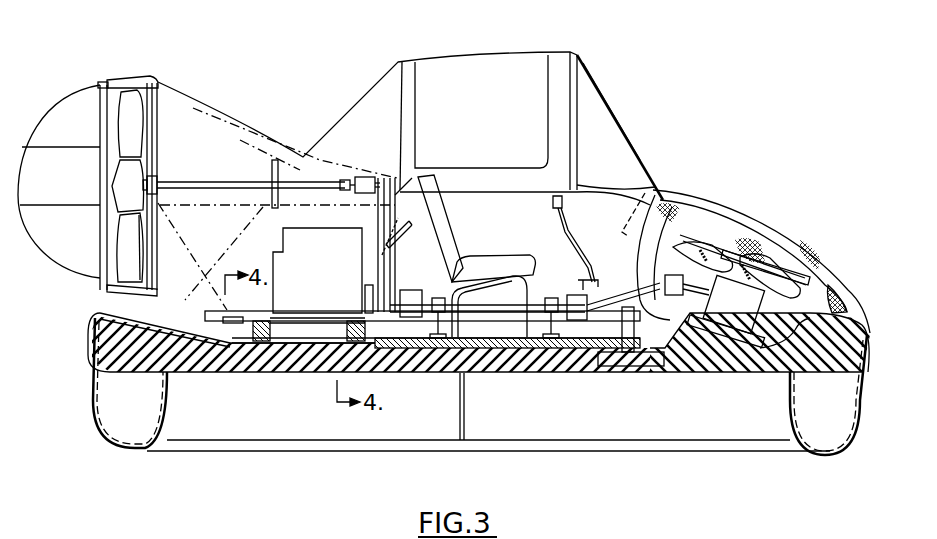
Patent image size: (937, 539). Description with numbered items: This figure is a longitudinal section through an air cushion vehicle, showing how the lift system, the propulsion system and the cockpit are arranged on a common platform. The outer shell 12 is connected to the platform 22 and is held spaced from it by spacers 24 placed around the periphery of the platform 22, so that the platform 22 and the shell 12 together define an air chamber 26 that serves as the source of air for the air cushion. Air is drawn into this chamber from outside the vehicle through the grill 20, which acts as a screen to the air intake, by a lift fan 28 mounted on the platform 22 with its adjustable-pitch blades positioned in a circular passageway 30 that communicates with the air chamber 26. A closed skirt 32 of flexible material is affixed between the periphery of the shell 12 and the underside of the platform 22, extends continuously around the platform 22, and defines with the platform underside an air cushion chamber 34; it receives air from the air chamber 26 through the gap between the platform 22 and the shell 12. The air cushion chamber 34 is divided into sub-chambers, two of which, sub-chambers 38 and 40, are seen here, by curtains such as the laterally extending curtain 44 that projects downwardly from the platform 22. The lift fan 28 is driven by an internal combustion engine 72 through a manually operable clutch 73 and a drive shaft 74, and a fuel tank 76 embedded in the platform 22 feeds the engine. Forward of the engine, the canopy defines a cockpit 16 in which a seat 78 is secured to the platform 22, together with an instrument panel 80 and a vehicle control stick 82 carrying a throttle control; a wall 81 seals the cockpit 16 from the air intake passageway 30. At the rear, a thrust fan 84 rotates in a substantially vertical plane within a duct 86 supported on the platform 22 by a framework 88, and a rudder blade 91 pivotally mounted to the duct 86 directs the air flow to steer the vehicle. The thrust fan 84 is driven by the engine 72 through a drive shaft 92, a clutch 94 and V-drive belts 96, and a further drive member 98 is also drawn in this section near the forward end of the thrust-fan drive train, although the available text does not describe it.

The shell 12 is at (862, 322).
The cabin or cockpit 16 is at (513, 228).
The grill 20 is at (777, 247).
The platform 22 is at (712, 368).
The spacers 24 is at (88, 350).
The air chamber 26 is at (797, 345).
The lift fan 28 is at (746, 316).
The circular passageway 30 is at (838, 272).
The closed skirt 32 is at (835, 455).
The air cushion chamber 34 is at (604, 410).
The sub-chamber 38 is at (715, 428).
The sub-chamber 40 is at (244, 425).
The curtain 44 is at (466, 407).
The internal combustion engine 72 is at (332, 293).
The manually operable clutch 73 is at (418, 348).
The drive shaft 74 is at (495, 340).
The fuel tank 76 is at (640, 362).
The seat 78 is at (487, 267).
The instrument panel 80 is at (650, 190).
The wall 81 is at (672, 207).
The vehicle control stick 82 is at (578, 251).
The thrust fan 84 is at (120, 290).
The duct 86 is at (138, 78).
The framework 88 is at (277, 209).
The rudder blade 91 is at (55, 242).
The drive shaft 92 is at (205, 183).
The clutch 94 is at (362, 178).
The V-drive belts 96 is at (393, 255).
The steering column 98 is at (404, 190).